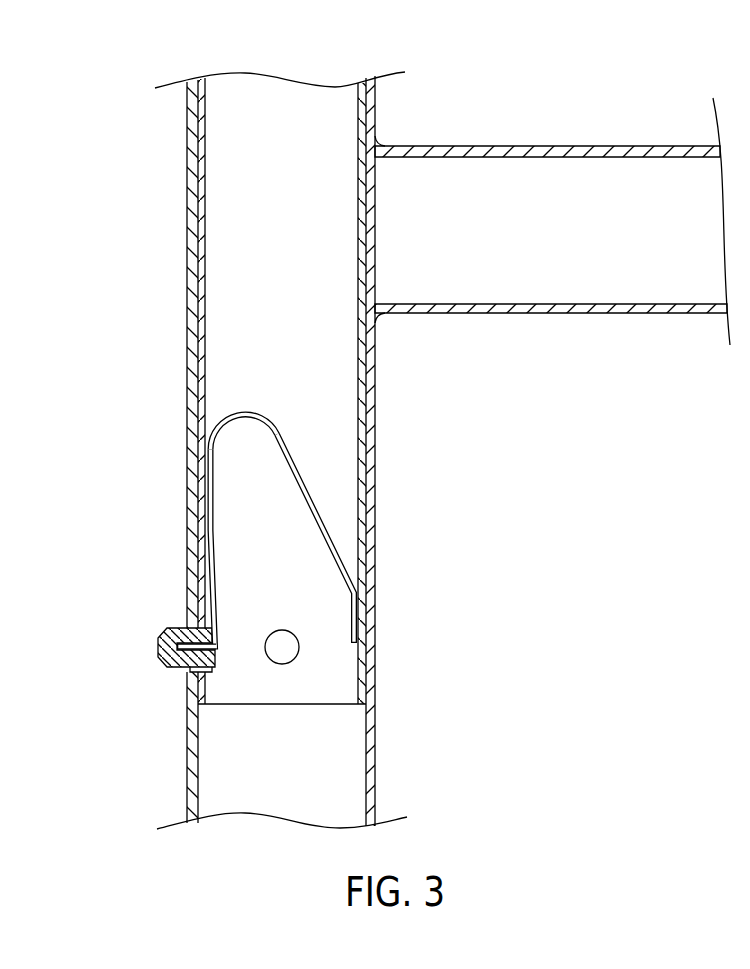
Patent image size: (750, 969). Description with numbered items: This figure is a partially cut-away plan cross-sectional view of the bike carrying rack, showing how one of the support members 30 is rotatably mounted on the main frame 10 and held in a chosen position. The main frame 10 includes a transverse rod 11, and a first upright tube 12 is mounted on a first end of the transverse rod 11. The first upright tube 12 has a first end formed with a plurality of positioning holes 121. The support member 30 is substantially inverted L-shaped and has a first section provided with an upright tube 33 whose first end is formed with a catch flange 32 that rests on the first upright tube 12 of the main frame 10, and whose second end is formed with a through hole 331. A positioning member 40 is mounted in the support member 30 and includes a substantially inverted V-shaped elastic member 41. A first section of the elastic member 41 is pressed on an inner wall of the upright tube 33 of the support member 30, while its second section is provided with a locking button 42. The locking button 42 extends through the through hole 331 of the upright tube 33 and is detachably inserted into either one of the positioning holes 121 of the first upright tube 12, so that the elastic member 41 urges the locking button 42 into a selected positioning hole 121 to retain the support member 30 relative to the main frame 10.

The horizontal tube 10 is at (552, 179).
The tube wall 11 is at (569, 148).
The lower tube 12 is at (188, 765).
The hole 121 is at (187, 670).
The inner tube 30 is at (187, 147).
The connector sleeve 32 is at (373, 101).
The resilient strip 33 is at (139, 548).
The bent end 331 is at (203, 625).
The positioning member 40 is at (265, 522).
The curved portion 41 is at (290, 453).
The push button 42 is at (167, 647).